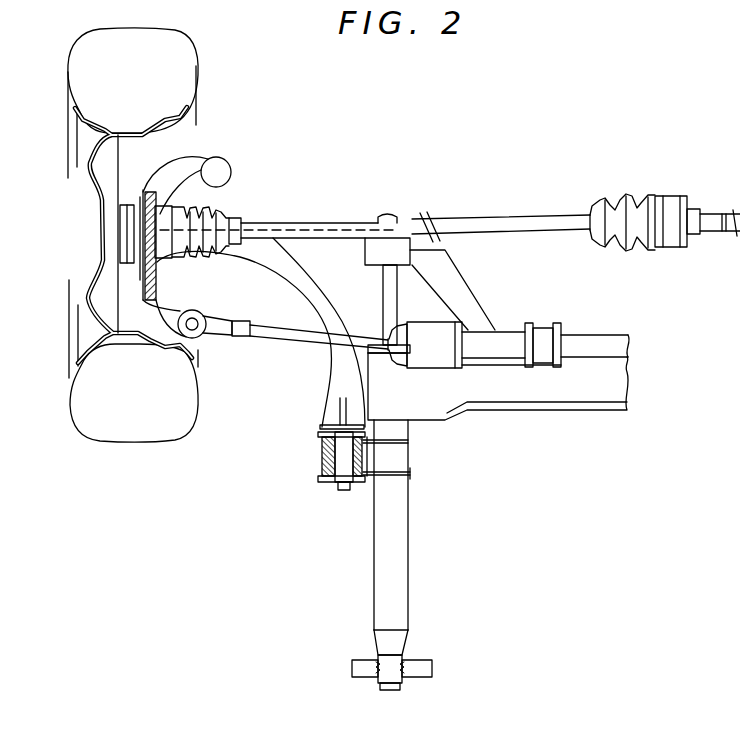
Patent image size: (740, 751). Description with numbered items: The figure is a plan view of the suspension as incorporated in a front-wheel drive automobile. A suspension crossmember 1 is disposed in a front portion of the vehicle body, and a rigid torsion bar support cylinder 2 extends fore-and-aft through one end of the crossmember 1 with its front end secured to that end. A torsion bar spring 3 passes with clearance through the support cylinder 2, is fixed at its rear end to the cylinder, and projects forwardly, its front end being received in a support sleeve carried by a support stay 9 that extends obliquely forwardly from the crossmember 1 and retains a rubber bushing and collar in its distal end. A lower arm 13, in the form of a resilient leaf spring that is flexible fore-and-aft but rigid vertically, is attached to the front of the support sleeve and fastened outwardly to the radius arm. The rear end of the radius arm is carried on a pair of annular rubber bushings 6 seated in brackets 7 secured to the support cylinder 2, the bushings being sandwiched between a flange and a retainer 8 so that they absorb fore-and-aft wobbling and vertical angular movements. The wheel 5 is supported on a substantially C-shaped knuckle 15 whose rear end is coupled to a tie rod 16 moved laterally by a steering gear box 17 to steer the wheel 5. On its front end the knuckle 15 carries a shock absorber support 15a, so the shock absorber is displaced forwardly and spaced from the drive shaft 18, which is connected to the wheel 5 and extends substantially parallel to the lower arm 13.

The suspension crossmember 1 is at (590, 387).
The torsion bar support cylinder 2 is at (395, 541).
The torsion bar spring 3 is at (382, 293).
The wheel 5 is at (186, 64).
The annular rubber bushings 6 is at (326, 485).
The brackets 7 is at (325, 468).
The retainer 8 is at (355, 490).
The support stay 9 is at (452, 301).
The lower arm 13 is at (327, 223).
The knuckle 15 is at (137, 247).
The shock absorber support 15a is at (226, 169).
The tie rod 16 is at (298, 343).
The steering gear box 17 is at (618, 344).
The drive shaft 18 is at (517, 226).